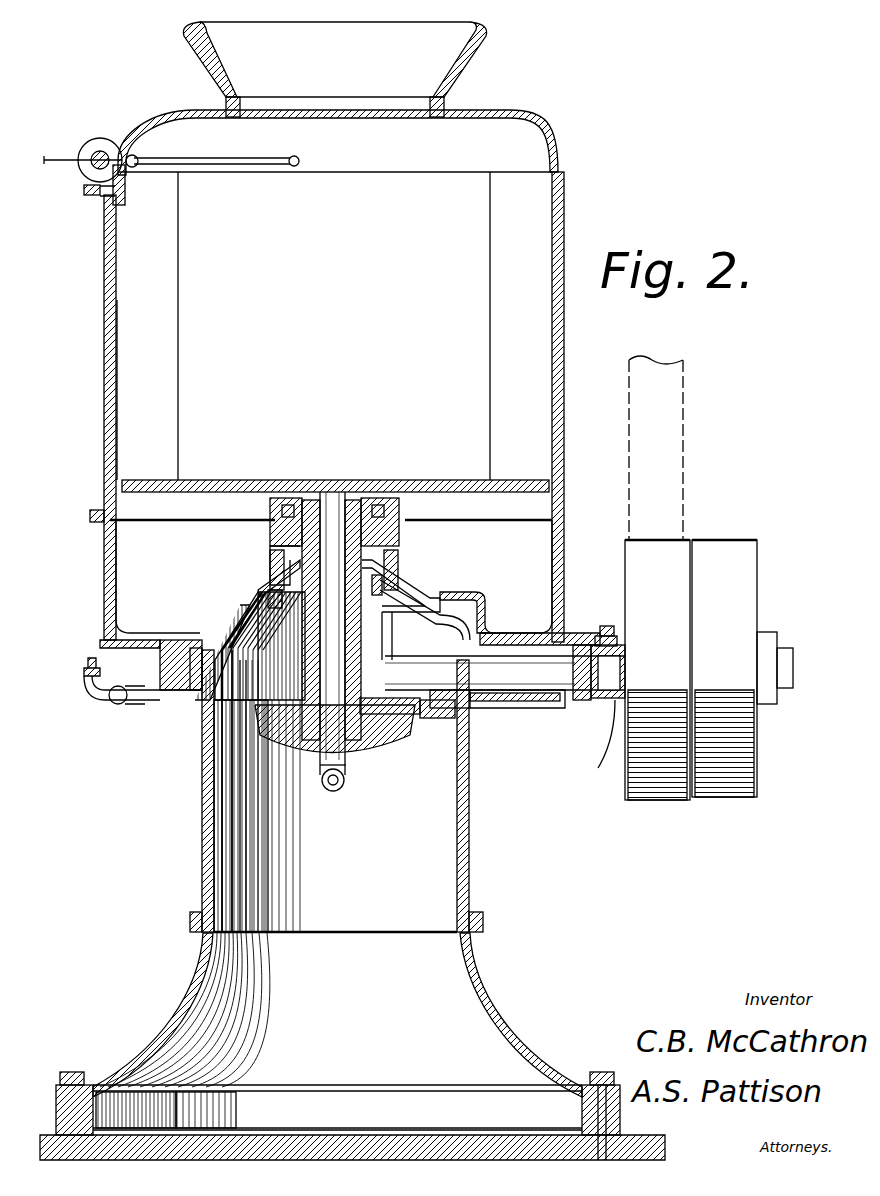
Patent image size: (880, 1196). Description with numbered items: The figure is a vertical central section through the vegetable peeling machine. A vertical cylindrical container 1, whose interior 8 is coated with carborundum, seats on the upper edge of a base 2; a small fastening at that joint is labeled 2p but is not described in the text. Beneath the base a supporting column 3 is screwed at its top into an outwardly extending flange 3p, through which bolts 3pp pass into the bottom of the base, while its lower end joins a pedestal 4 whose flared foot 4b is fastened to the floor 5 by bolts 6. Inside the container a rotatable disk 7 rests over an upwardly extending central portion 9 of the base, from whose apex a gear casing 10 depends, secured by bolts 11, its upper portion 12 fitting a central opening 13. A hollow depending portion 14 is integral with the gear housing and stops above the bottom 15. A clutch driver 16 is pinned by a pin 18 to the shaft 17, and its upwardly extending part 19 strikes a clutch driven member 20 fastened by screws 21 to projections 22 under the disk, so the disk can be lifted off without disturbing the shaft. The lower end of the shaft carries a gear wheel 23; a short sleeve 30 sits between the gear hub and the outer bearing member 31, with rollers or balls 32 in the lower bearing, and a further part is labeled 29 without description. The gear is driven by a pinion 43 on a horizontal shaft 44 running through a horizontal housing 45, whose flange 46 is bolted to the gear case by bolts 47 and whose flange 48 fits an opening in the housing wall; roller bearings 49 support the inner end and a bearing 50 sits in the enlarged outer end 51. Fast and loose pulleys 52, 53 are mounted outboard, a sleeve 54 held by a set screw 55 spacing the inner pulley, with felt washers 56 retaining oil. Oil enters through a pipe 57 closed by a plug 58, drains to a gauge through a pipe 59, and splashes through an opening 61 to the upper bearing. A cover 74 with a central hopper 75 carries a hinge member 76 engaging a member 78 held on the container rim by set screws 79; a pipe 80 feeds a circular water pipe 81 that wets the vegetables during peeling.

The vertical cylindrical container 1 is at (104, 322).
The base 2 is at (564, 530).
The casing bolt 2p is at (90, 516).
The supporting column 3 is at (470, 830).
The outwardly extending flange 3p is at (118, 700).
The flange bolts 3pp is at (215, 732).
The support or pedestal 4 is at (116, 548).
The support or pedestal 4b is at (495, 968).
The floor or other support 5 is at (345, 1108).
The bolts 6 is at (602, 1070).
The rotatable disk 7 is at (495, 492).
The interior of the container 8 is at (118, 382).
The upwardly extending central portion 9 is at (235, 600).
The gear casing 10 is at (250, 625).
The bolts 11 is at (270, 556).
The upper portion of the gear case 12 is at (258, 568).
The central opening 13 is at (420, 575).
The vertically depending hollow portion 14 is at (295, 634).
The bottom of the gear case 15 is at (300, 750).
The clutch driver 16 is at (262, 556).
The shaft 17 is at (400, 598).
The pin 18 is at (385, 548).
The upwardly extending part 19 is at (270, 512).
The clutch driven member 20 is at (398, 515).
The screws 21 is at (384, 625).
The projections 22 is at (290, 492).
The gear wheel 23 is at (368, 755).
The sleeve 29 is at (245, 765).
The short sleeve 30 is at (222, 745).
The outer roller bearing member 31 is at (408, 720).
The rollers or balls 32 is at (260, 785).
The pinion 43 is at (455, 718).
The horizontal shaft 44 is at (540, 708).
The horizontal housing 45 is at (505, 705).
The flange 46 is at (485, 628).
The bolts 47 is at (470, 700).
The flange 48 is at (475, 618).
The roller bearings 49 is at (445, 690).
The roller or ball bearing 50 is at (608, 671).
The enlarged outer end 51 is at (617, 640).
The fast pulley 52 is at (640, 582).
The loose pulley 53 is at (740, 578).
The sleeve 54 is at (592, 745).
The set screw 55 is at (612, 628).
The felt washers 56 is at (565, 700).
The oil supply pipe 57 is at (175, 690).
The plug 58 is at (92, 660).
The pipe 59 is at (310, 770).
The opening 61 is at (445, 605).
The cover 74 is at (160, 120).
The hopper 75 is at (334, 69).
The hinge member 76 is at (100, 150).
The member 78 is at (125, 200).
The set screws 79 is at (90, 195).
The pipe 80 is at (52, 155).
The water pipe 81 is at (228, 163).